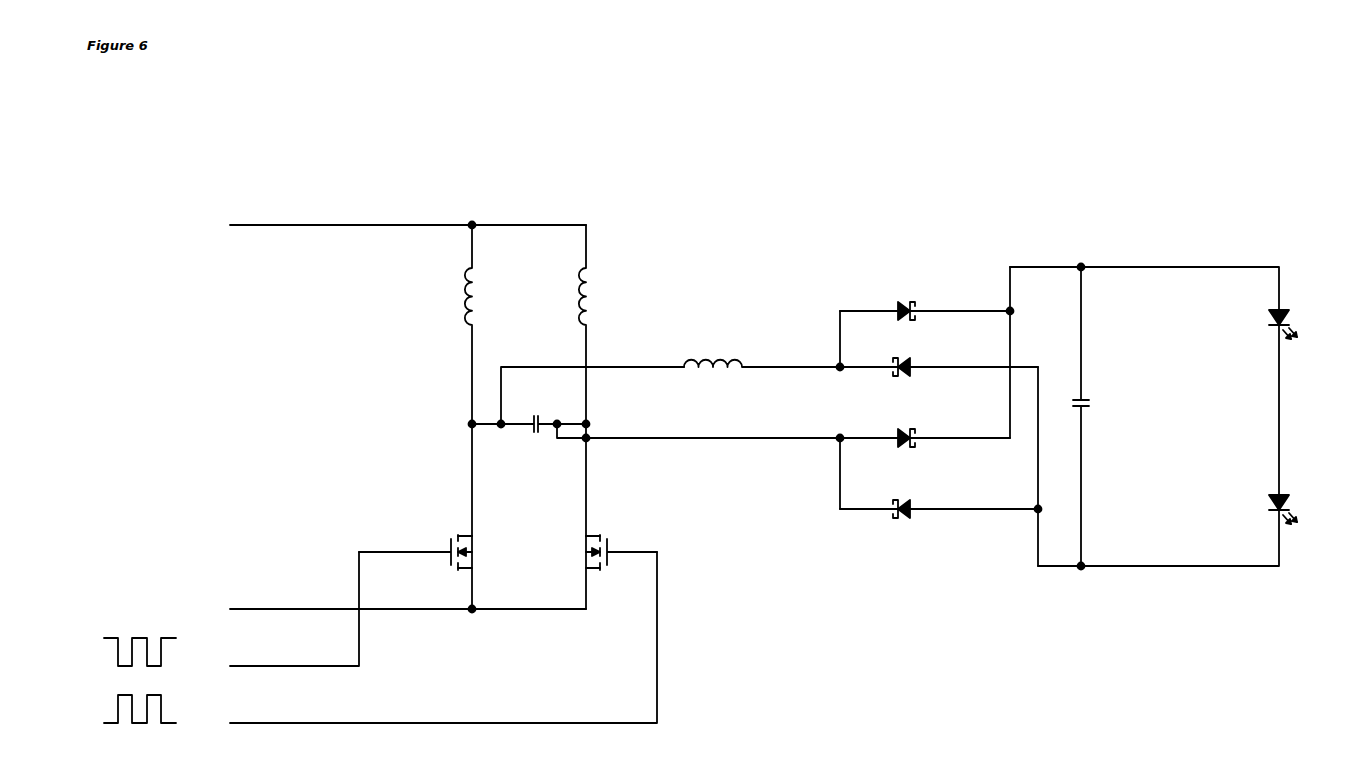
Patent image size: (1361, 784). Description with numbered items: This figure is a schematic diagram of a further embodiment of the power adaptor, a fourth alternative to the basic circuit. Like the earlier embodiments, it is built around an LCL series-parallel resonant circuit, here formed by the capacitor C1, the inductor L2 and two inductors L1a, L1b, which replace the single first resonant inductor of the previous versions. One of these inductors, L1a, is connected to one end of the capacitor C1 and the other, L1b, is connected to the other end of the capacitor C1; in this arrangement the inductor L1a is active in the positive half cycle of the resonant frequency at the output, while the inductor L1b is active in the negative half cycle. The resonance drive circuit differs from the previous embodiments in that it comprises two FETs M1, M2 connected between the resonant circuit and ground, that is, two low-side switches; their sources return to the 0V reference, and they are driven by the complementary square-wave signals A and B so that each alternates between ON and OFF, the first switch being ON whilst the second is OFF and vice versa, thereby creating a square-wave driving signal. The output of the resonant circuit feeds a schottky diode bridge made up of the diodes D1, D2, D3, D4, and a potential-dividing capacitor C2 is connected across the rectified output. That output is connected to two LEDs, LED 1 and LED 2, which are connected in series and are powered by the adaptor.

The inductor L1a is at (451, 324).
The inductor L1b is at (565, 324).
The inductor L2 is at (762, 354).
The capacitor C1 is at (529, 413).
The potential-dividing capacitor C2 is at (1096, 416).
The FET M1 is at (415, 566).
The FET M2 is at (621, 566).
The schottky diode D1 is at (939, 356).
The schottky diode D2 is at (925, 427).
The schottky diode D3 is at (939, 498).
The schottky diode D4 is at (925, 300).
The LED LED 1 is at (1305, 324).
The LED LED 2 is at (1305, 509).
The ground reference 0V is at (391, 609).
The drive signal A is at (231, 613).
The drive signal B is at (380, 641).